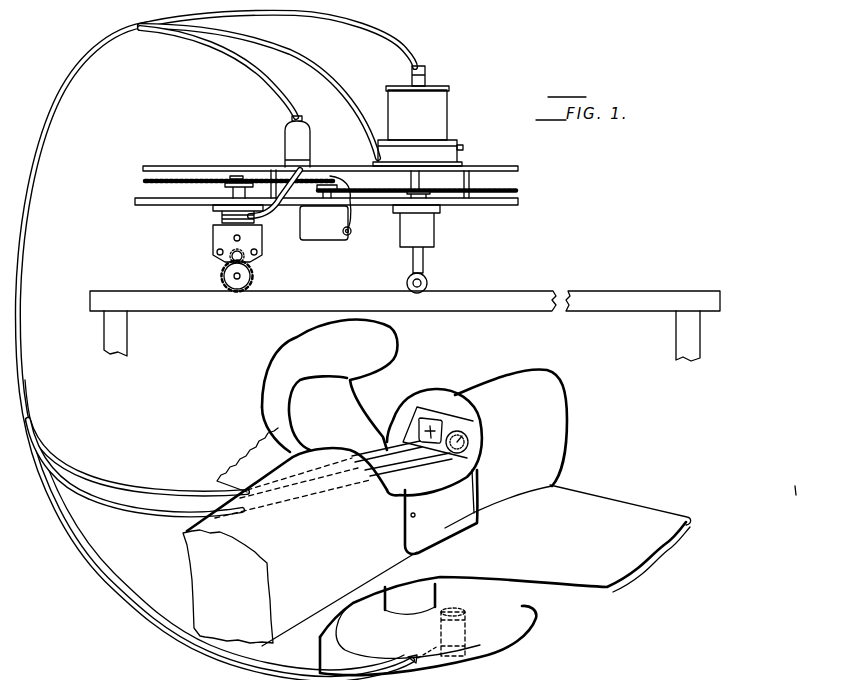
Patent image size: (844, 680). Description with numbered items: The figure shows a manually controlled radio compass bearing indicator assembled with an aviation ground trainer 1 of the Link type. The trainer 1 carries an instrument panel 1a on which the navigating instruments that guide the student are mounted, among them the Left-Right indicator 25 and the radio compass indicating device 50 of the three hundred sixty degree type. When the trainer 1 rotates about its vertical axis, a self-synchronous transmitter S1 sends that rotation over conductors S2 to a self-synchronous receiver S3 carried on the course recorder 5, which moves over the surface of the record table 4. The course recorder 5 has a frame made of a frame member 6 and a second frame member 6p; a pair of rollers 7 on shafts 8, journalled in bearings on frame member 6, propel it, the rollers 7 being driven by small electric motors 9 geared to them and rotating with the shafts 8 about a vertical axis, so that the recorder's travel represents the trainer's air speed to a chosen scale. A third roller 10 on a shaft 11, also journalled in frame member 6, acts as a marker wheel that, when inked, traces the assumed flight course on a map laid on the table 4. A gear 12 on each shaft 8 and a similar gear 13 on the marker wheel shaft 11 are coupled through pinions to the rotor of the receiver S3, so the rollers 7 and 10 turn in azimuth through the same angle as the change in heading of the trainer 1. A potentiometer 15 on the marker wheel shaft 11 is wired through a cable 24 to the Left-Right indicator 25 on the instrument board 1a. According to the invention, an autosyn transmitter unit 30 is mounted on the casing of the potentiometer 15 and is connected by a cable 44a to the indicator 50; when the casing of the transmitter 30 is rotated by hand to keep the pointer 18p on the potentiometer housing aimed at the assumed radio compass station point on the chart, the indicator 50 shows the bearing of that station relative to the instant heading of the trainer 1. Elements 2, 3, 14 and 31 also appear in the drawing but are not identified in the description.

The aviation ground trainer 1 is at (556, 461).
The instrument panel 1a is at (472, 426).
The chair base 2 is at (540, 632).
The cable loop 3 is at (28, 229).
The record table 4 is at (509, 296).
The course recorder 5 is at (326, 193).
The frame member 6 is at (517, 203).
The frame member 6p is at (512, 171).
The rollers 7 is at (253, 279).
The shafts 8 is at (231, 193).
The small electric motors 9 is at (262, 242).
The third roller 10 is at (428, 281).
The shaft 11 is at (424, 256).
The gear 12 is at (142, 181).
The gear 13 is at (518, 191).
The solenoid 14 is at (284, 140).
The potentiometer 15 is at (469, 161).
The pointer 18p is at (461, 146).
The cable 24 is at (326, 86).
The Left-Right indicator 25 is at (435, 420).
The self-synchronous transmitter unit 30 is at (426, 116).
The motor housing 31 is at (387, 107).
The cable 44a is at (384, 36).
The radio compass indicating device 50 is at (469, 443).
The transmitter S1 is at (470, 636).
The conductors S2 is at (350, 232).
The receiver S3 is at (328, 238).